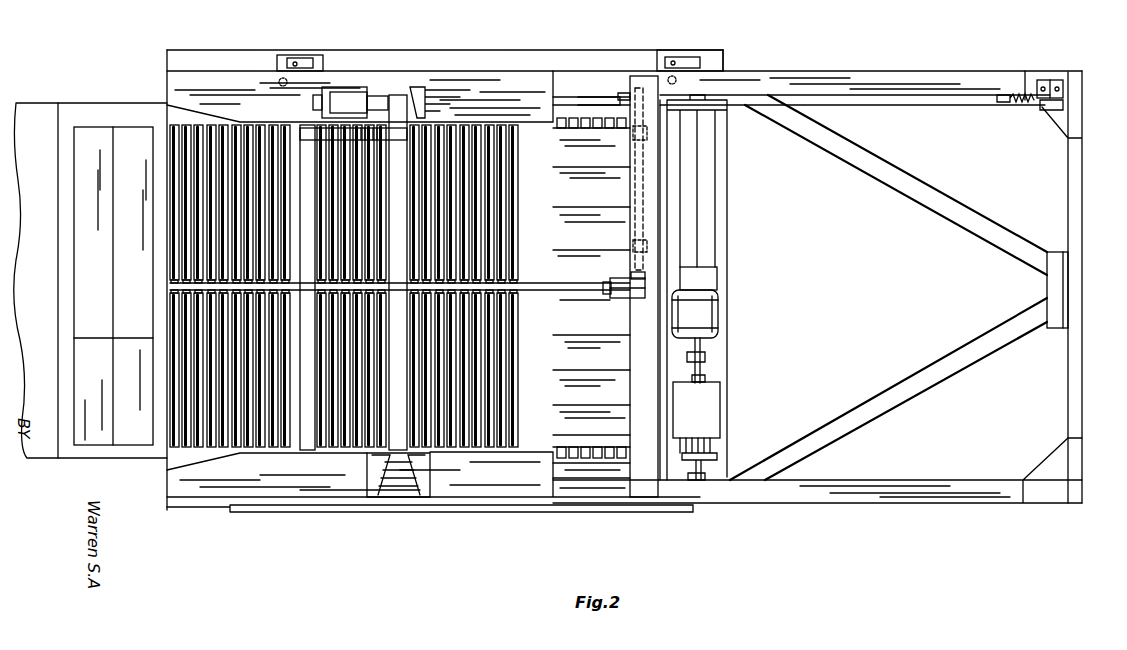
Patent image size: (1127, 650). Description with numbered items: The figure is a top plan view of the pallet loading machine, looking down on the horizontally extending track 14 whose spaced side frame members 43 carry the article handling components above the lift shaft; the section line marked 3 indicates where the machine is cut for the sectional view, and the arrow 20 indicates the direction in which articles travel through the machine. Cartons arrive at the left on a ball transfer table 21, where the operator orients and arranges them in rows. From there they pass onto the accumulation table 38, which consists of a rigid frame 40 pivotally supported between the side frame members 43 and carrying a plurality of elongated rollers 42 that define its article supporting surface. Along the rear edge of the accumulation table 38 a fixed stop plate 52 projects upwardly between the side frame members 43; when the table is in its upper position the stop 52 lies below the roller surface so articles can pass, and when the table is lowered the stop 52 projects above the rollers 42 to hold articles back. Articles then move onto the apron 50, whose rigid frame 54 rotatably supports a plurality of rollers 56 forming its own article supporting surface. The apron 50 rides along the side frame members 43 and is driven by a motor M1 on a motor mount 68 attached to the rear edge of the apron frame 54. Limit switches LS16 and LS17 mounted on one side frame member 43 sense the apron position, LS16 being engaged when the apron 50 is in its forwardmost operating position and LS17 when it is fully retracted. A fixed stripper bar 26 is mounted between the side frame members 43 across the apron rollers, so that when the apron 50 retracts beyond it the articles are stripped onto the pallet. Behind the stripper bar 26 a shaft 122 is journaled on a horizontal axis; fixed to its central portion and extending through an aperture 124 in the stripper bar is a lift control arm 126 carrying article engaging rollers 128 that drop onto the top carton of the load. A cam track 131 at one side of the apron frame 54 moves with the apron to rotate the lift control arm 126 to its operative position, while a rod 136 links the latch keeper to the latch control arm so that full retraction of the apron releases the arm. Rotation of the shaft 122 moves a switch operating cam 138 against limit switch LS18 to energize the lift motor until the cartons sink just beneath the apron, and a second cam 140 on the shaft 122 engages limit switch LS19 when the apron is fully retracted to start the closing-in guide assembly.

The track 14 is at (789, 66).
The direction of sheet travel 20 is at (38, 294).
The ball transfer table 21 is at (83, 118).
The stripper bar 26 is at (630, 344).
The accumulation table 38 is at (169, 396).
The rigid frame 40 is at (170, 288).
The elongated rollers 42 is at (200, 206).
The side frame members 43 is at (207, 69).
The apron 50 is at (498, 456).
The fixed stop plate 52 is at (280, 440).
The apron frame 54 is at (580, 108).
The rollers 56 is at (490, 262).
The motor mount 68 is at (728, 313).
The shaft 122 is at (637, 188).
The aperture 124 is at (641, 298).
The lift control arm 126 is at (627, 282).
The article engaging rollers 128 is at (612, 290).
The cam track 131 is at (553, 99).
The rod 136 is at (952, 108).
The switch operating cam 138 is at (635, 241).
The cam 140 is at (640, 154).
The limit switch LS16 is at (313, 36).
The limit switch LS17 is at (700, 40).
The limit switch LS18 is at (645, 272).
The limit switch LS19 is at (640, 133).
The motor M1 is at (716, 300).
The section line 3- 3 is at (178, 88).